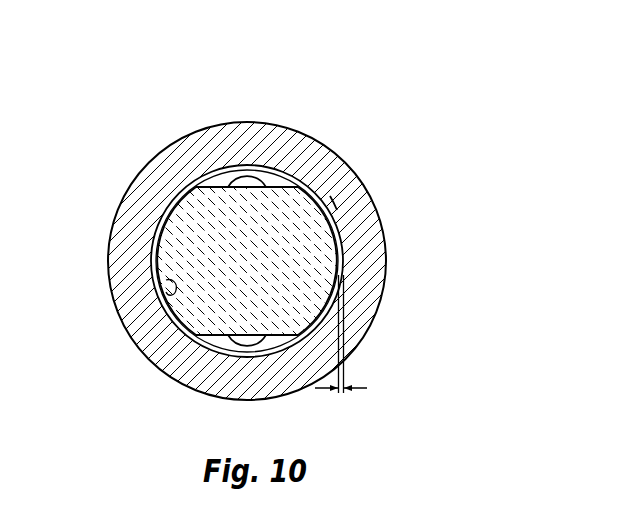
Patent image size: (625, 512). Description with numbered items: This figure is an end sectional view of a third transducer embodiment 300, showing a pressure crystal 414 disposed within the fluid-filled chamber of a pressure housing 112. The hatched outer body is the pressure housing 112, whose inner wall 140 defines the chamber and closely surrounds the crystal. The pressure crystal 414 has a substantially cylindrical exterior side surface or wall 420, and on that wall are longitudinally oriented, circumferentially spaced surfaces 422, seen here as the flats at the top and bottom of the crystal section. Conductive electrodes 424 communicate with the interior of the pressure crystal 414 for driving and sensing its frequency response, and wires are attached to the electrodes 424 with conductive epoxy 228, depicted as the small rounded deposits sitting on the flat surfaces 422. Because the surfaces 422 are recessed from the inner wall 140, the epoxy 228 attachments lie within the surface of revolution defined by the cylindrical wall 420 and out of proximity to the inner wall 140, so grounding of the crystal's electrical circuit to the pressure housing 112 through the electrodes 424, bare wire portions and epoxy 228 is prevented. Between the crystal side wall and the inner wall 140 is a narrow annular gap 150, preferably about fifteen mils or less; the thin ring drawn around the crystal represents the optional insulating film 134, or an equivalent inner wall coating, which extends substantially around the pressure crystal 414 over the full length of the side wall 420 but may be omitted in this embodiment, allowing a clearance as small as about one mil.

The transducer embodiment 300 is at (305, 91).
The pressure housing 112 is at (363, 345).
The cylindrical exterior side surface or wall 420 is at (155, 248).
The pressure crystal 414 is at (322, 253).
The conductive epoxy 228 is at (250, 183).
The surfaces 422 is at (208, 187).
The conductive electrodes 424 is at (222, 338).
The insulating film 134 is at (322, 199).
The inner wall 140 is at (172, 293).
The annular gap 150 is at (350, 393).